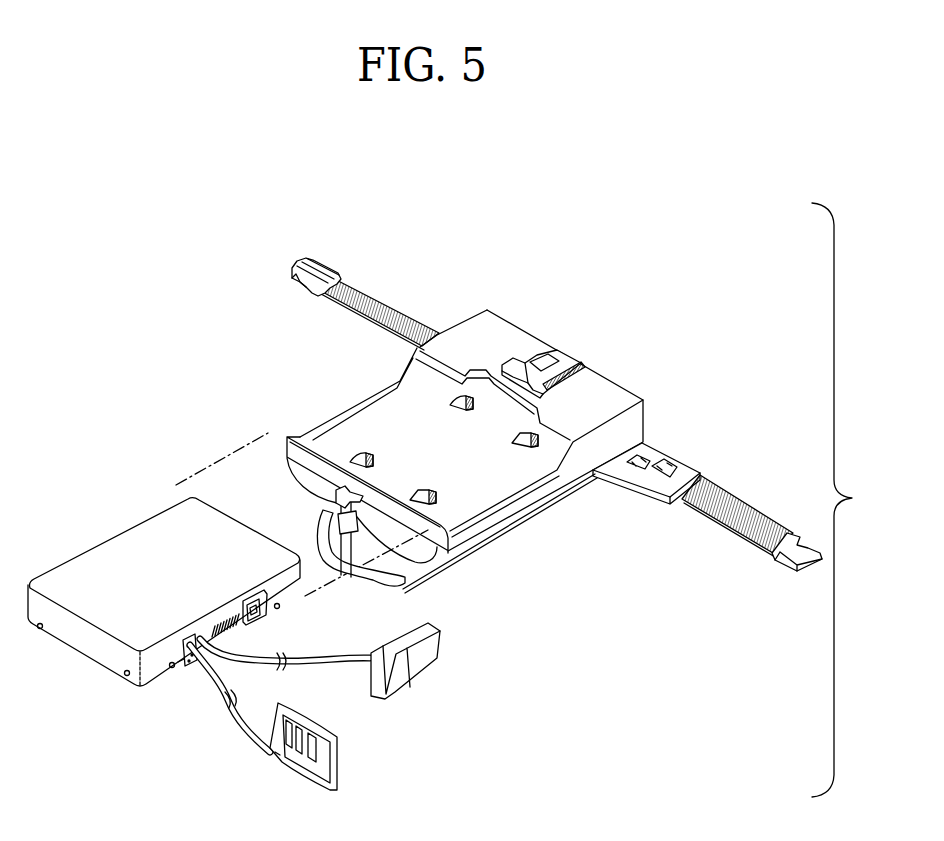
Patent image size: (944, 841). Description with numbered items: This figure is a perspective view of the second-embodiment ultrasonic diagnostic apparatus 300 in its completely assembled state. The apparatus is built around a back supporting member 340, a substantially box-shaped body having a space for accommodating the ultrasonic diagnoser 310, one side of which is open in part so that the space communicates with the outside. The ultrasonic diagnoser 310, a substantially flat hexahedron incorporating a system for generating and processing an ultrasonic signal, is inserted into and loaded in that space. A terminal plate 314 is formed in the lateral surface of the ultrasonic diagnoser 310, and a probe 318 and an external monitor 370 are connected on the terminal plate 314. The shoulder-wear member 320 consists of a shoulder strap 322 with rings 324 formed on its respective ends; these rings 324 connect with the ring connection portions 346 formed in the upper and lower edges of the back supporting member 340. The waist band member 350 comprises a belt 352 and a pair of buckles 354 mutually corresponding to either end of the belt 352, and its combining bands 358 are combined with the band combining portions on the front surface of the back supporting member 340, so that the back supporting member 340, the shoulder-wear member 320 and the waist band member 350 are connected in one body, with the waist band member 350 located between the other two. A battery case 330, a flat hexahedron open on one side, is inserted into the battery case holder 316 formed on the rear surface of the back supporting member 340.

The ultrasonic diagnostic apparatus 300 is at (854, 500).
The ultrasonic diagnoser 310 is at (127, 527).
The terminal plate 314 is at (175, 664).
The battery case holder 316 is at (580, 366).
The probe 318 is at (418, 660).
The shoulder-wear member 320 is at (458, 574).
The shoulder strap 322 is at (407, 580).
The rings 324 is at (290, 482).
The battery case 330 is at (556, 351).
The back supporting member 340 is at (649, 390).
The ring connection portions 346 is at (338, 488).
The waist band member 350 is at (718, 485).
The belt 352 is at (387, 303).
The buckles 354 is at (319, 264).
The combining bands 358 is at (535, 447).
The external monitor 370 is at (330, 762).